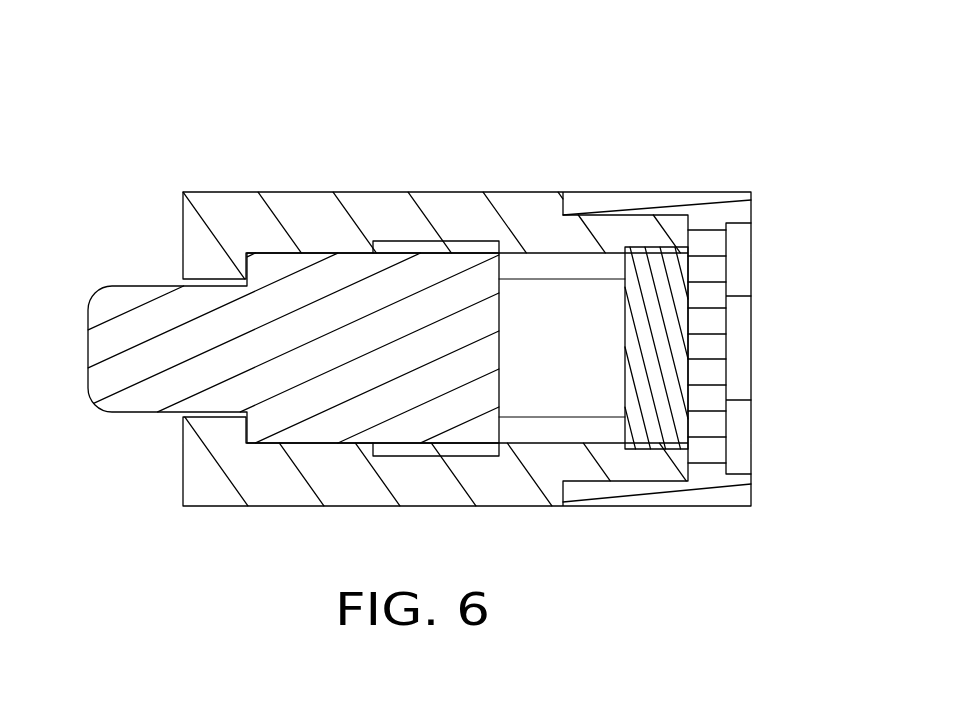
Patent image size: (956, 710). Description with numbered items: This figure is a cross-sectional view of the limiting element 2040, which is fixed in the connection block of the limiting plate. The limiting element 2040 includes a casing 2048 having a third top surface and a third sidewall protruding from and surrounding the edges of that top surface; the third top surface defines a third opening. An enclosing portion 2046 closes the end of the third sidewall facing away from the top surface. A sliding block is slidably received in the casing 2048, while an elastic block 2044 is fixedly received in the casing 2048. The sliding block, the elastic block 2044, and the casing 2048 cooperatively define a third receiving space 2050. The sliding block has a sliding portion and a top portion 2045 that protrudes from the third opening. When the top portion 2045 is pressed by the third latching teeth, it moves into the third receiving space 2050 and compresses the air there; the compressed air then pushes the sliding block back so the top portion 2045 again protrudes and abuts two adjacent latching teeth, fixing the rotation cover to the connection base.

The limiting element 2040 is at (416, 71).
The elastic block 2044 is at (672, 337).
The top portion 2045 is at (159, 363).
The enclosing portion 2046 is at (710, 208).
The casing 2048 is at (232, 213).
The third receiving space 2050 is at (540, 303).